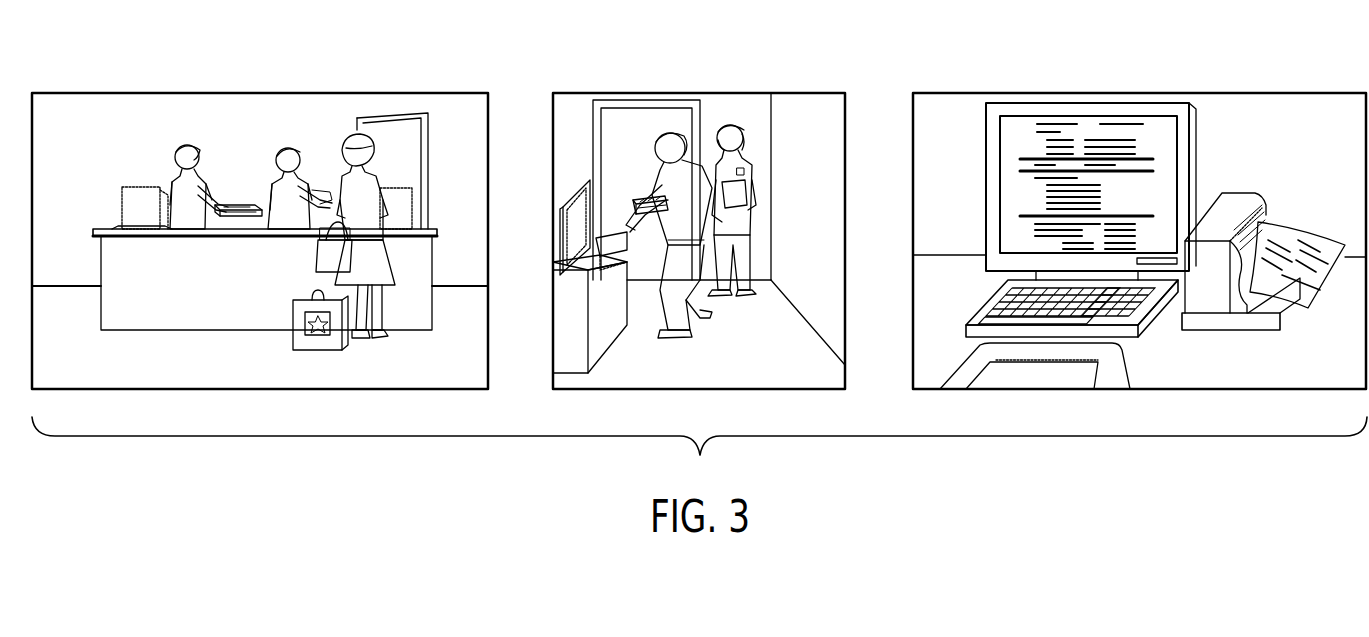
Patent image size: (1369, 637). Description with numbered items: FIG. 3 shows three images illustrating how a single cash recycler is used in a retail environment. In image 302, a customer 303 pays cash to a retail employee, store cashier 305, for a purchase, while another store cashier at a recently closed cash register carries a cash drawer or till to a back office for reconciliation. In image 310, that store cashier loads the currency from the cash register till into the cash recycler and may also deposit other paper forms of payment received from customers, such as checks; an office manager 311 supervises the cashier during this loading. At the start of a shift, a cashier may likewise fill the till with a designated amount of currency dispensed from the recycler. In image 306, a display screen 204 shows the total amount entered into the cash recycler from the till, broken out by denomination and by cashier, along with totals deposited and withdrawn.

The image 302 is at (288, 212).
The customer 303 is at (383, 262).
The store cashier 305 is at (282, 148).
The image 310 is at (729, 212).
The office manager 311 is at (745, 212).
The display screen 204 is at (1023, 132).
The image 306 is at (1139, 209).